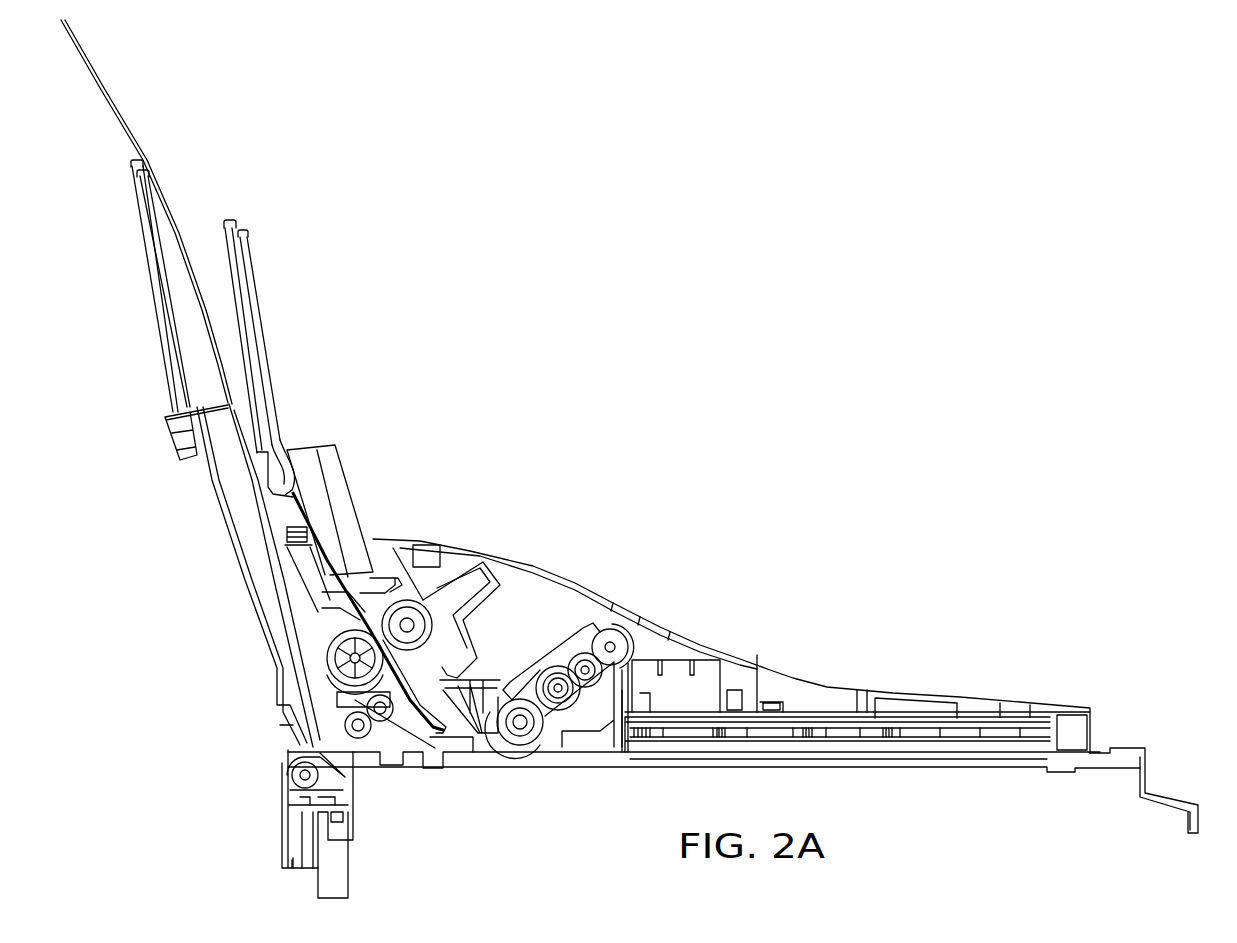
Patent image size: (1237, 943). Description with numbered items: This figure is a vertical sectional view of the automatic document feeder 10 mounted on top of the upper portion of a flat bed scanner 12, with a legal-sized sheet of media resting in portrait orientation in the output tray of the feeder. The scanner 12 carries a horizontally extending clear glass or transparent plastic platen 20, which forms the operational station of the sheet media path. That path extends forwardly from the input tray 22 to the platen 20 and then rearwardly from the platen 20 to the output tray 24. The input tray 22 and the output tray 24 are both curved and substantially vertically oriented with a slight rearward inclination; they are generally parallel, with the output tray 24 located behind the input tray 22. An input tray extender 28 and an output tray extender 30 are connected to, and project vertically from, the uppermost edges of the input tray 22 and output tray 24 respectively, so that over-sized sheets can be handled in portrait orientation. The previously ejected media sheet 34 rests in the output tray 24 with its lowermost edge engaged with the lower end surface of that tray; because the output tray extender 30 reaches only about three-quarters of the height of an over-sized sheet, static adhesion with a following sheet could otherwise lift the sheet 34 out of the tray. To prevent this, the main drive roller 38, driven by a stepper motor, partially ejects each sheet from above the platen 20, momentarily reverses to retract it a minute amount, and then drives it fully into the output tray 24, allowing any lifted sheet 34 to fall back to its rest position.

The automatic document feeder 10 is at (540, 548).
The flat bed scanner 12 is at (1152, 738).
The transparent platen 20 is at (729, 747).
The input tray 22 is at (308, 518).
The output tray 24 is at (217, 505).
The input tray extender 28 is at (245, 248).
The output tray extender 30 is at (138, 209).
The media sheet 34 is at (165, 195).
The main drive roller 38 is at (520, 755).